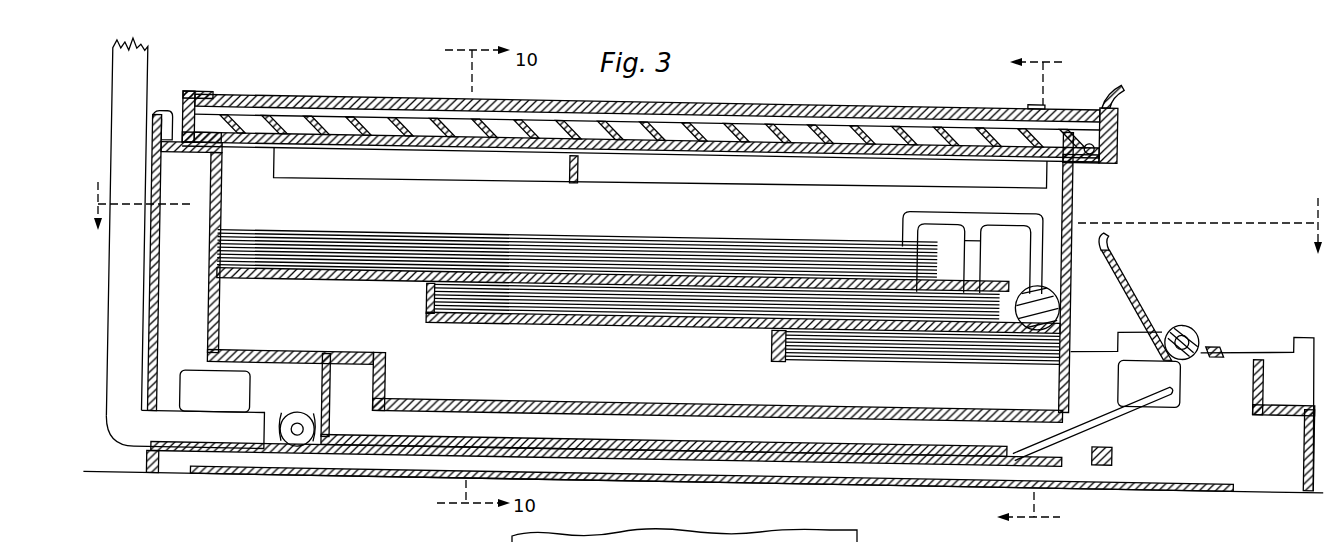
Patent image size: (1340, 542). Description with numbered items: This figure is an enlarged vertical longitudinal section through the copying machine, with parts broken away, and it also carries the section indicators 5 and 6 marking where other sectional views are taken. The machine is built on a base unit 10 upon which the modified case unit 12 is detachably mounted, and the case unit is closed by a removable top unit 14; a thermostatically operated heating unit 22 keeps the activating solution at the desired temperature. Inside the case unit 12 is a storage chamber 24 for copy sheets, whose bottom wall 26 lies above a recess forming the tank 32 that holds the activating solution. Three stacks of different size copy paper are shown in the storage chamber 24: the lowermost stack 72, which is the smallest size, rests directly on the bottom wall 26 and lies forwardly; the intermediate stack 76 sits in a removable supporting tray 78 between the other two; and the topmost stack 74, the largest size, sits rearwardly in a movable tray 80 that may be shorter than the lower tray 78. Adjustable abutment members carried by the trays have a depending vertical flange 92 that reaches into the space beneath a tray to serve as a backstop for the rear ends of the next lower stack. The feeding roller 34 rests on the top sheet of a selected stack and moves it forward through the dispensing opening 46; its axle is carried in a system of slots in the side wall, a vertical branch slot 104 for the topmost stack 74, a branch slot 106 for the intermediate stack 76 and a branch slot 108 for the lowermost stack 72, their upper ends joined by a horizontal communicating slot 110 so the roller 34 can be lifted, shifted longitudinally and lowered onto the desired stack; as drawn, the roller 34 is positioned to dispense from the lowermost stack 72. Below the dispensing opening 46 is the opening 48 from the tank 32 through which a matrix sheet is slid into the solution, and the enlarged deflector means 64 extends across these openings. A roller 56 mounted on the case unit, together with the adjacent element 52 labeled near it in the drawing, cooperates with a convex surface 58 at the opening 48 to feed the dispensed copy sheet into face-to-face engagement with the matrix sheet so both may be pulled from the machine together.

The section line 5- 5 is at (707, 229).
The section line 6- 6 is at (1021, 290).
The base unit 10 is at (386, 485).
The case unit 12 is at (162, 100).
The top unit 14 is at (318, 90).
The heating unit 22 is at (294, 414).
The storage chamber 24 is at (222, 228).
The bottom wall 26 is at (372, 352).
The tank 32 is at (347, 403).
The feeding roller 34 is at (1064, 297).
The dispensing opening 46 is at (1078, 353).
The opening 48 is at (1097, 413).
The roller 52 is at (1194, 338).
The roller 56 is at (1176, 328).
The convex surface 58 is at (1216, 351).
The deflector means 64 is at (1122, 290).
The lowermost stack 72 is at (880, 349).
The topmost stack 74 is at (679, 258).
The intermediate stack 76 is at (706, 303).
The supporting tray 78 is at (614, 321).
The movable tray 80 is at (368, 275).
The vertical flange 92 is at (428, 293).
The branch slot 104 is at (904, 232).
The branch slot 106 is at (974, 240).
The branch slot 108 is at (1040, 232).
The communicating slot 110 is at (953, 222).